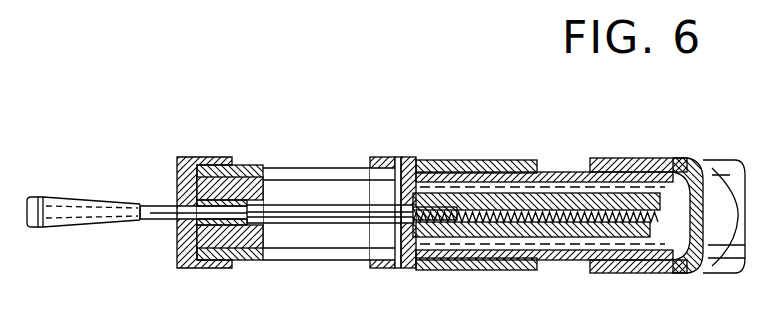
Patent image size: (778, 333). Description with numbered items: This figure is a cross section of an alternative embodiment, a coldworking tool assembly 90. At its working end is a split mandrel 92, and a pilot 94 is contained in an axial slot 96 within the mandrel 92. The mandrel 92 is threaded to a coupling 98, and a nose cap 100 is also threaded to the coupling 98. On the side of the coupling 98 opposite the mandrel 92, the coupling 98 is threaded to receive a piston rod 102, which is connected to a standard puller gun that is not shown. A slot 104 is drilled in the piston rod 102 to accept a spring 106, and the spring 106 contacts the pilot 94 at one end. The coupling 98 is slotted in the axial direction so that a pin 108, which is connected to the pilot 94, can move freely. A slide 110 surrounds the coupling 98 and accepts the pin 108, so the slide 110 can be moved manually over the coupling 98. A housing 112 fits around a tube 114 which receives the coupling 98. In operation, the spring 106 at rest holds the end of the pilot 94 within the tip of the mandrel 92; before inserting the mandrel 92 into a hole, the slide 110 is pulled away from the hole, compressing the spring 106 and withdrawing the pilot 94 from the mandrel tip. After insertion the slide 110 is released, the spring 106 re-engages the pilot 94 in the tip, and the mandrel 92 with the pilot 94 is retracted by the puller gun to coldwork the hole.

The coldworking tool assembly 90 is at (362, 115).
The mandrel 92 is at (50, 197).
The pilot 94 is at (276, 206).
The axial slot 96 is at (147, 207).
The coupling 98 is at (320, 168).
The nose cap 100 is at (175, 262).
The piston rod 102 is at (552, 170).
The slot 104 is at (610, 216).
The spring 106 is at (520, 222).
The pin 108 is at (397, 157).
The slide 110 is at (480, 158).
The housing 112 is at (618, 162).
The tube 114 is at (575, 166).